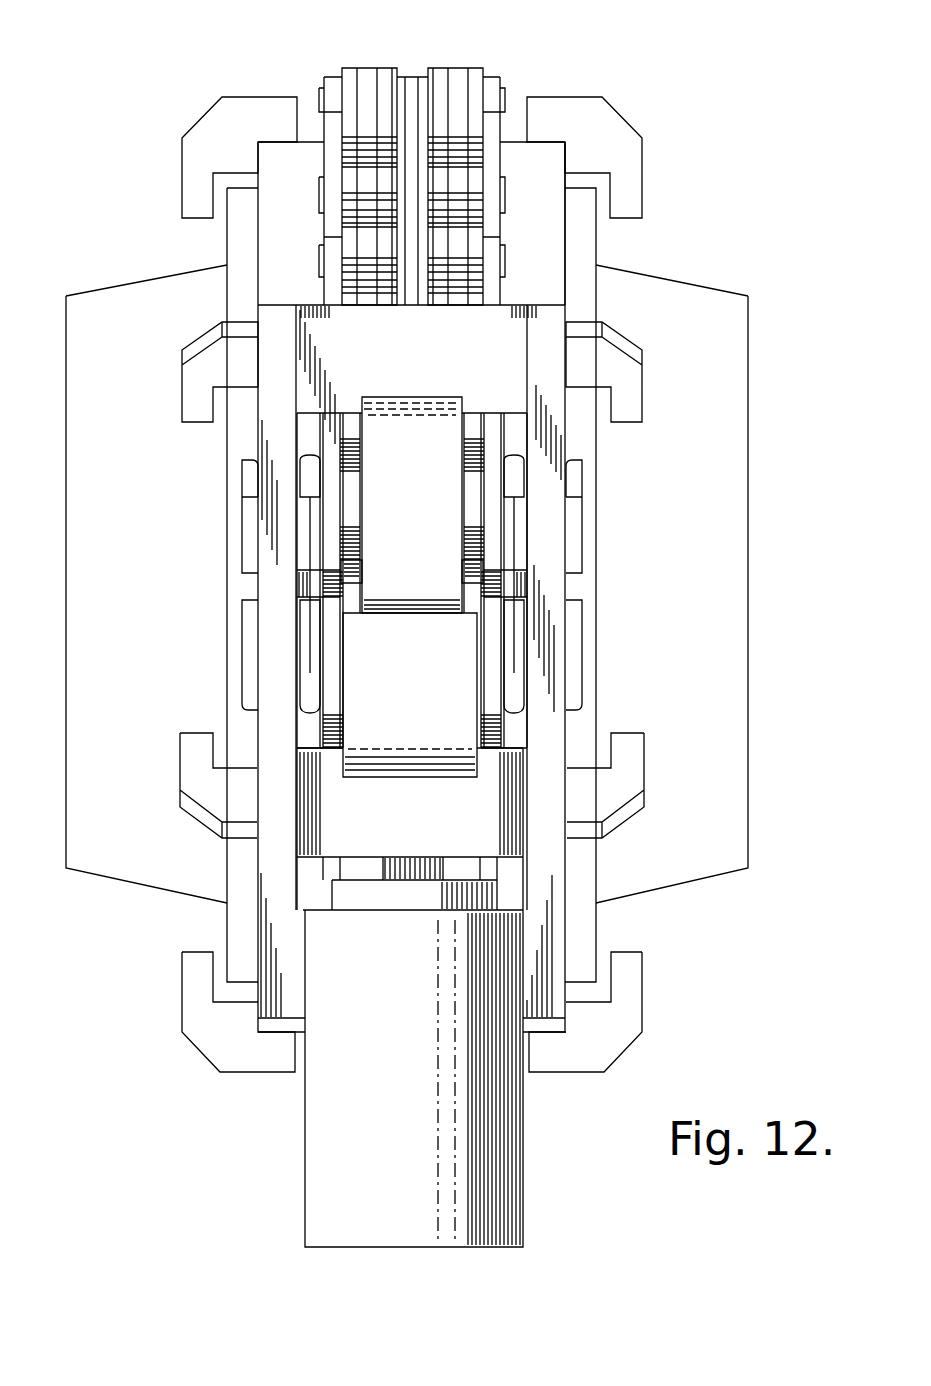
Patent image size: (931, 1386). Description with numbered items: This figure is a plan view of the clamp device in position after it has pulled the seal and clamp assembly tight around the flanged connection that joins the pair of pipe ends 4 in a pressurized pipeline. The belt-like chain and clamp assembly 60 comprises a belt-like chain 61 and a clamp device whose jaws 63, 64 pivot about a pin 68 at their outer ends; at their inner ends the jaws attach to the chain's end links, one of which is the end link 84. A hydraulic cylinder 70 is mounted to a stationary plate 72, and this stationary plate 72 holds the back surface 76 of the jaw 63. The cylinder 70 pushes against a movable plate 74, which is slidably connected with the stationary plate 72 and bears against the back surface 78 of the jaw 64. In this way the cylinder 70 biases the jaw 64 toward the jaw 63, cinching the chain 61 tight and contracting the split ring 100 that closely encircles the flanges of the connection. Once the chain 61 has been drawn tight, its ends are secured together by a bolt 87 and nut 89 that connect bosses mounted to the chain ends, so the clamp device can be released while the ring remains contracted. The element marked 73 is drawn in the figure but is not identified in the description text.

The pipe end 4 is at (122, 277).
The belt-like chain and clamp assembly 60 is at (362, 62).
The belt-like chain 61 is at (330, 258).
The jaw 63 is at (432, 508).
The jaw 64 is at (432, 703).
The pin 68 is at (473, 590).
The hydraulic cylinder 70 is at (305, 1132).
The stationary plate 72 is at (420, 372).
The guide block 73 is at (262, 537).
The movable plate 74 is at (422, 837).
The back surface 76 is at (432, 410).
The back surface 78 is at (433, 752).
The end link 84 is at (472, 523).
The bolt 87 is at (250, 480).
The nut 89 is at (250, 690).
The split ring 100 is at (567, 207).